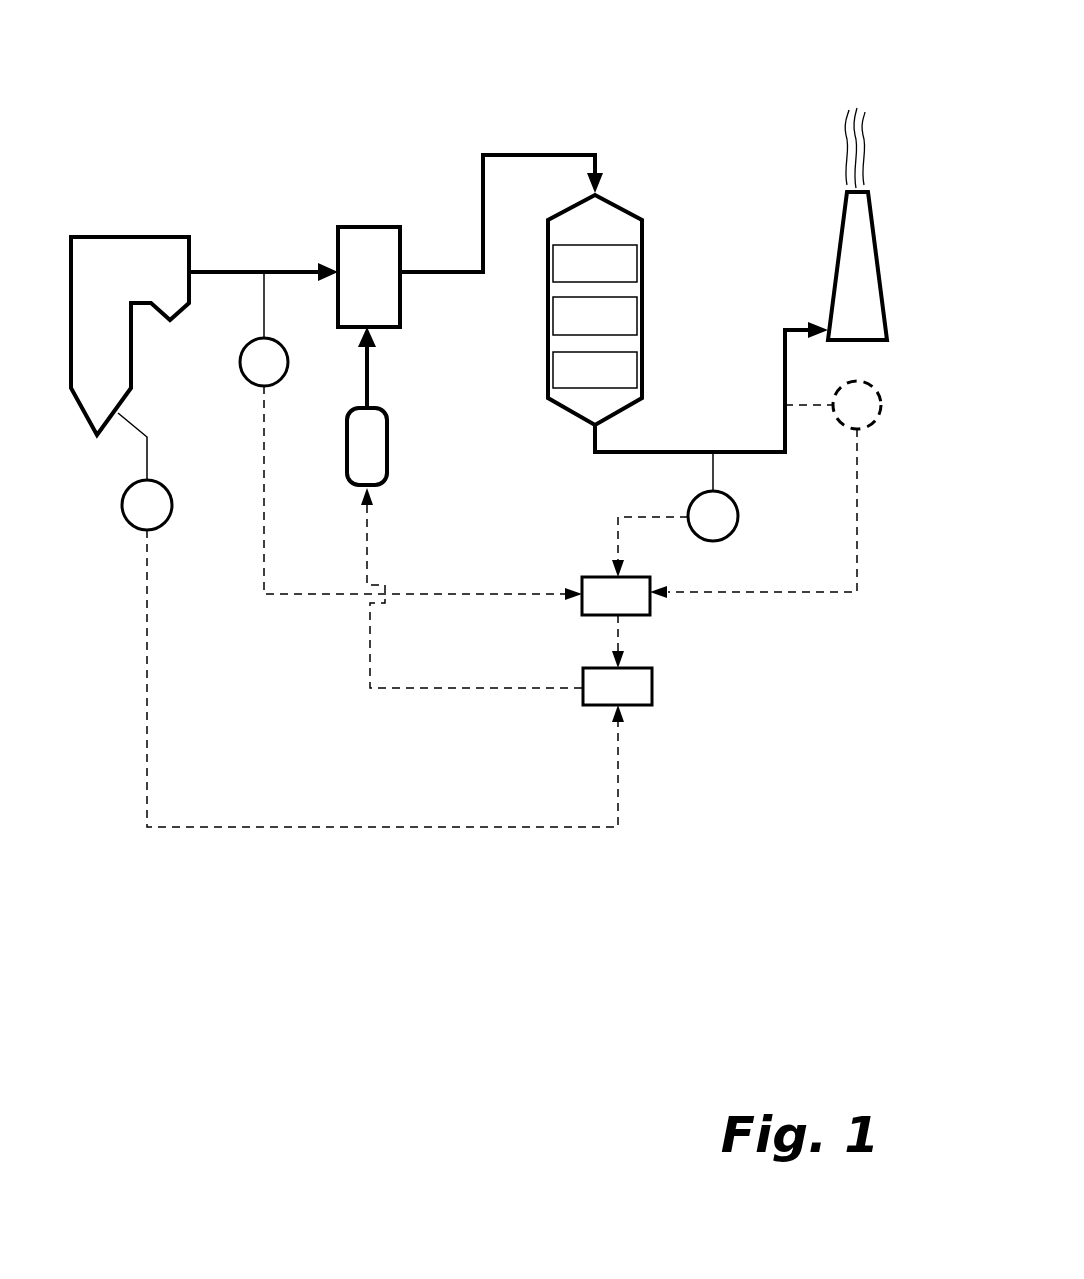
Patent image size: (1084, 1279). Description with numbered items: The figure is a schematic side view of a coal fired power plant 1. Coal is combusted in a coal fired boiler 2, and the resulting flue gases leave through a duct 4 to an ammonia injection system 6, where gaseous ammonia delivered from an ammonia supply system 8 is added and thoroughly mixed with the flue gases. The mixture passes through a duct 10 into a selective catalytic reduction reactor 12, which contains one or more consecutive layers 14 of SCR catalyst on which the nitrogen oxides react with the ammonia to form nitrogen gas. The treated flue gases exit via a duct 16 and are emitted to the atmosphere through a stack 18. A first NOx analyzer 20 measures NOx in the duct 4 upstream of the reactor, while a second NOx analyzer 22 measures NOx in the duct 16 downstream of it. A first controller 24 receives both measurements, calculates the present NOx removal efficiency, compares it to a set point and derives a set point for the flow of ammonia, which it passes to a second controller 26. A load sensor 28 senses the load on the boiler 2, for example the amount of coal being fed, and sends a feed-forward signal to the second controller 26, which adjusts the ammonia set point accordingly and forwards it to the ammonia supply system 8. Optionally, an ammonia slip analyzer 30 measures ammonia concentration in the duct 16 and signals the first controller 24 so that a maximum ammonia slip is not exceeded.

The power plant 1 is at (207, 86).
The coal fired boiler 2 is at (132, 237).
The duct 4 is at (228, 272).
The ammonia injection system 6 is at (365, 227).
The ammonia supply system 8 is at (388, 443).
The duct 10 is at (552, 155).
The selective catalytic reduction reactor 12 is at (620, 207).
The layers of SCR-catalyst 14 is at (637, 367).
The duct 16 is at (690, 452).
The stack 18 is at (840, 232).
The first NOx analyzer 20 is at (240, 380).
The second NOx analyzer 22 is at (737, 532).
The first controller 24 is at (597, 577).
The second controller 26 is at (652, 687).
The load sensor 28 is at (170, 513).
The ammonia slip analyzer 30 is at (880, 410).